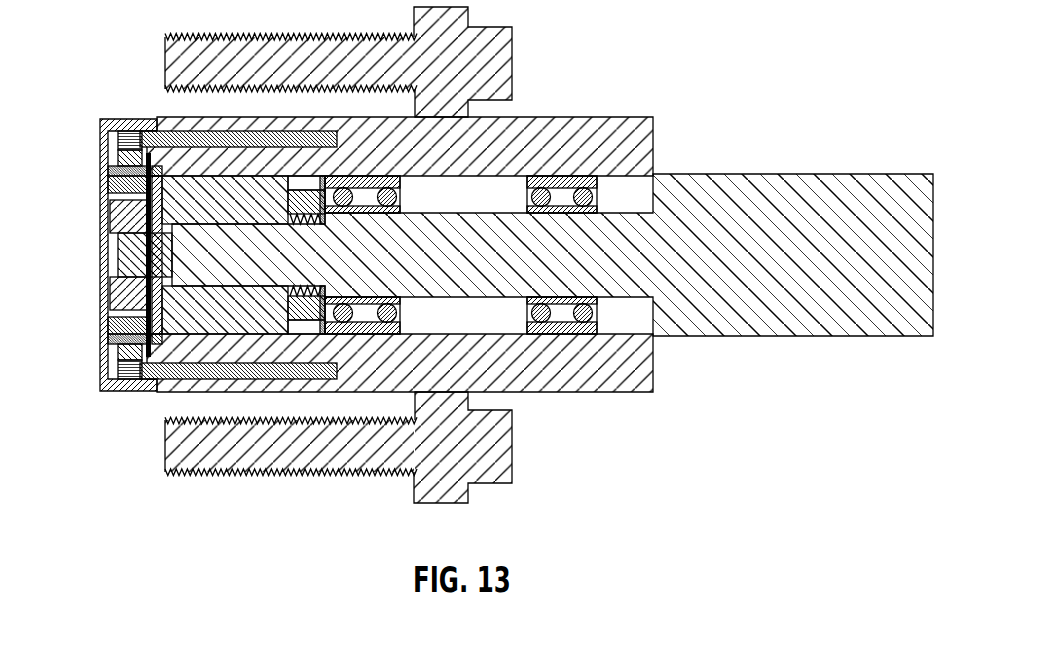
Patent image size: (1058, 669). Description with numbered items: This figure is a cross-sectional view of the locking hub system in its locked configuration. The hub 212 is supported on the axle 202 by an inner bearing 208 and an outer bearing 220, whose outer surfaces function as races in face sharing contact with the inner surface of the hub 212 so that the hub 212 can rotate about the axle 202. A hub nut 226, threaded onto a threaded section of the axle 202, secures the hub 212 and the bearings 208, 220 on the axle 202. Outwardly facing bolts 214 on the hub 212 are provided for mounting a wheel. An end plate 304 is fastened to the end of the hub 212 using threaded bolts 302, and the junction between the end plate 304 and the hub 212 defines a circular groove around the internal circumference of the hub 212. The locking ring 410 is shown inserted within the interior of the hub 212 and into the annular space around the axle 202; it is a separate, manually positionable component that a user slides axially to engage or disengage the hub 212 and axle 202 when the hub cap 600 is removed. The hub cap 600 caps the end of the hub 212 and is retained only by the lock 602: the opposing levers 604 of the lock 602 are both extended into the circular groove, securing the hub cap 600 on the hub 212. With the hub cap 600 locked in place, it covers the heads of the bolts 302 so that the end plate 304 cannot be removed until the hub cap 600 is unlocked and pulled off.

The axle 202 is at (783, 263).
The inner bearing 208 is at (572, 216).
The hub 212 is at (635, 116).
The bolts 214 is at (182, 36).
The outer bearing 220 is at (350, 334).
The hub nut 226 is at (307, 317).
The threaded bolts 302 is at (162, 143).
The end plate 304 is at (123, 347).
The locking ring 410 is at (187, 318).
The hub cap 600 is at (97, 152).
The lock 602 is at (113, 257).
The levers 604 is at (148, 177).